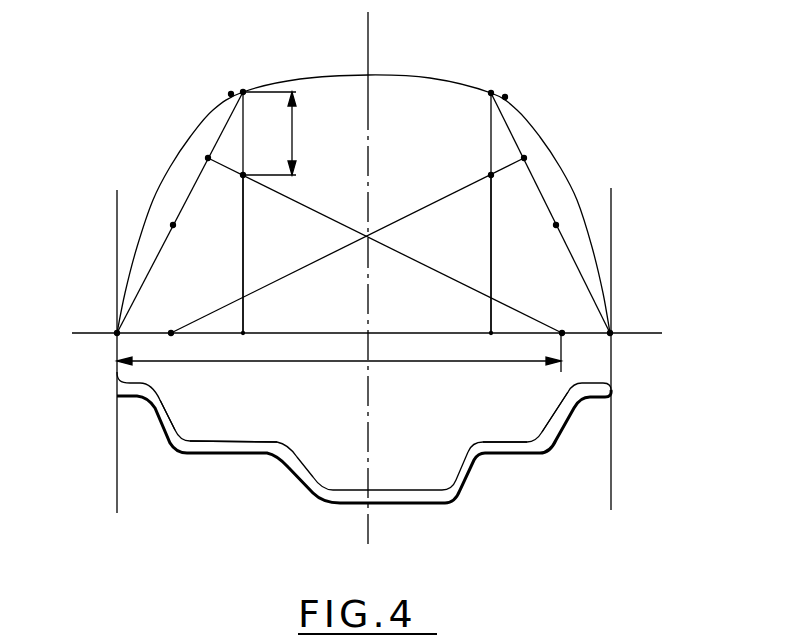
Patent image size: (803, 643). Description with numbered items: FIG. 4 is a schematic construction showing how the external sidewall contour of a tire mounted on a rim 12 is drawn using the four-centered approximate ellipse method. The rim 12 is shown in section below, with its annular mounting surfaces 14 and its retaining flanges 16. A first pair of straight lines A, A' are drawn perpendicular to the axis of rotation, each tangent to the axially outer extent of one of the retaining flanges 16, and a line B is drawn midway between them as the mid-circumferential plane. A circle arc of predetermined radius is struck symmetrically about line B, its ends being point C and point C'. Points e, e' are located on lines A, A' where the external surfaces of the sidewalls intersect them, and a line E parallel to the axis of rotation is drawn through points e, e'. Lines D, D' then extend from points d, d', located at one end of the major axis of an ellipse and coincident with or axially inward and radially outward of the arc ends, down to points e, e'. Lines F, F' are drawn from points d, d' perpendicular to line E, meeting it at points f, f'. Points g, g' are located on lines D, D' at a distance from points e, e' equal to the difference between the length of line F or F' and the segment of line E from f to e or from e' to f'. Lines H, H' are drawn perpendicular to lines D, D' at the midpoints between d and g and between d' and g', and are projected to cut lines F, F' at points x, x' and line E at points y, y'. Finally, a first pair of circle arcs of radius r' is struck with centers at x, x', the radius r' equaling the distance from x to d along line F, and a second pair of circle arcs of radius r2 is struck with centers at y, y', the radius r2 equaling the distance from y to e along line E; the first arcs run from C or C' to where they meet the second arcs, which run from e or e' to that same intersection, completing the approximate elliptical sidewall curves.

The rim 12 is at (343, 497).
The annular mounting surfaces 14 is at (220, 443).
The retaining flanges 16 is at (160, 412).
The line A is at (86, 351).
The line A' is at (643, 354).
The line B is at (368, 57).
The point c C is at (363, 185).
The point c' C' is at (525, 70).
The line D is at (180, 212).
The line D' is at (550, 213).
The line E is at (86, 333).
The point d is at (237, 185).
The point d' is at (479, 187).
The point e is at (100, 349).
The point e' is at (637, 350).
The point f is at (265, 349).
The point f' is at (481, 348).
The point g is at (192, 243).
The point g' is at (538, 254).
The line H is at (385, 245).
The line H' is at (347, 245).
The point x is at (228, 201).
The point x' is at (508, 202).
The point y is at (576, 352).
The point y' is at (193, 347).
The line F is at (259, 254).
The line F' is at (461, 254).
The radius r' is at (292, 133).
The radius r2 is at (280, 362).